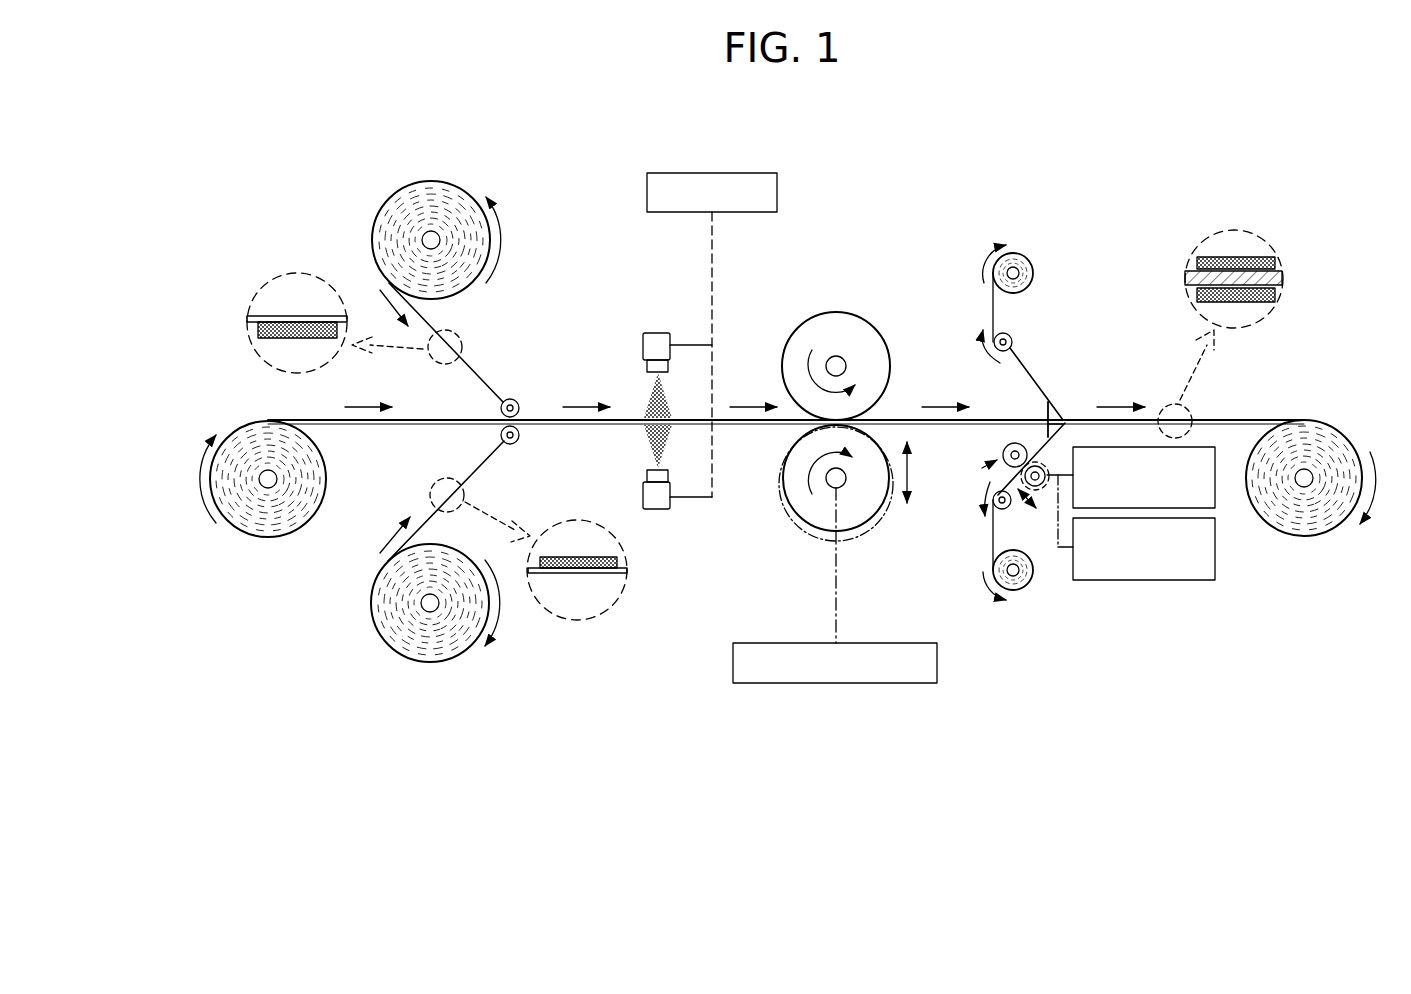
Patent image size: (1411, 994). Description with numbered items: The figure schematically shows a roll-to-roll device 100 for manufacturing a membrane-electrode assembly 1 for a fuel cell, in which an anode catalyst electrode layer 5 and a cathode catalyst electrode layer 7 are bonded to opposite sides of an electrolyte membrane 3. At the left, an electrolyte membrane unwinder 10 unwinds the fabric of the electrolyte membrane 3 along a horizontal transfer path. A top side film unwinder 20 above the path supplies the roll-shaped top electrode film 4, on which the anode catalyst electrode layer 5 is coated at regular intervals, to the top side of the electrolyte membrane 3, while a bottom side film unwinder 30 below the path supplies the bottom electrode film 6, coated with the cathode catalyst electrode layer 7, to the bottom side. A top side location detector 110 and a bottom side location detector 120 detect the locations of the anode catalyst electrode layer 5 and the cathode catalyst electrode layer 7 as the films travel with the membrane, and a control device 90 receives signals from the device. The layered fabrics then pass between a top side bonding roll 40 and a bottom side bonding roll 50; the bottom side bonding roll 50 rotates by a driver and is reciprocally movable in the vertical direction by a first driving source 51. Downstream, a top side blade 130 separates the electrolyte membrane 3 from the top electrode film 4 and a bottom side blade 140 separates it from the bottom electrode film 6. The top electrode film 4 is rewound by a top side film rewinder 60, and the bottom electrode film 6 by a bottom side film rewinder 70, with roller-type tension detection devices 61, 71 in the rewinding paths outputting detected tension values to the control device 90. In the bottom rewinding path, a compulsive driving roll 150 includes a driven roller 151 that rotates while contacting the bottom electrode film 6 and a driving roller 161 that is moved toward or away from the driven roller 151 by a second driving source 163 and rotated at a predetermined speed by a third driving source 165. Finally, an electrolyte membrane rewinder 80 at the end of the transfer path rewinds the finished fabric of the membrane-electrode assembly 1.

The device for manufacturing a membrane-electrode assembly 100 is at (740, 128).
The membrane-electrode assembly 1 is at (1241, 256).
The electrolyte membrane 3 is at (374, 426).
The top electrode film 4 is at (270, 317).
The anode catalyst electrode layer 5 is at (312, 332).
The bottom electrode film 6 is at (558, 574).
The cathode catalyst electrode layer 7 is at (601, 568).
The electrolyte membrane unwinder 10 is at (262, 542).
The top side film unwinder 20 is at (402, 190).
The bottom side film unwinder 30 is at (398, 652).
The top side bonding roll 40 is at (843, 311).
The bottom side bonding roll 50 is at (783, 496).
The first driving source 51 is at (938, 663).
The top side film rewinder 60 is at (1025, 254).
The tension detection device 61 is at (1012, 336).
The bottom side film rewinder 70 is at (1031, 590).
The tension detection device 71 is at (1000, 512).
The electrolyte membrane rewinder 80 is at (1290, 538).
The control device 90 is at (778, 192).
The top side location detector 110 is at (658, 333).
The bottom side location detector 120 is at (658, 510).
The top side blade 130 is at (1050, 401).
The bottom side blade 140 is at (1062, 435).
The compulsive driving roll 150 is at (985, 475).
The driven roller 151 is at (1001, 452).
The driving roller 161 is at (1029, 468).
The second driving source 163 is at (1216, 478).
The third driving source 165 is at (1140, 582).